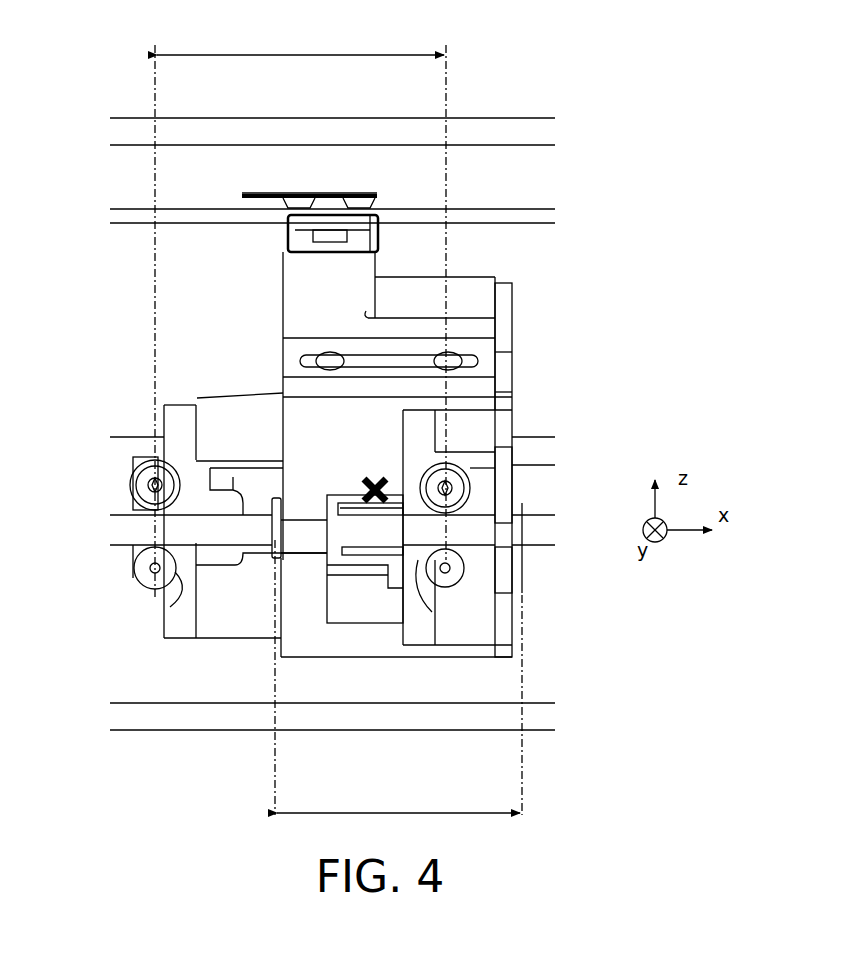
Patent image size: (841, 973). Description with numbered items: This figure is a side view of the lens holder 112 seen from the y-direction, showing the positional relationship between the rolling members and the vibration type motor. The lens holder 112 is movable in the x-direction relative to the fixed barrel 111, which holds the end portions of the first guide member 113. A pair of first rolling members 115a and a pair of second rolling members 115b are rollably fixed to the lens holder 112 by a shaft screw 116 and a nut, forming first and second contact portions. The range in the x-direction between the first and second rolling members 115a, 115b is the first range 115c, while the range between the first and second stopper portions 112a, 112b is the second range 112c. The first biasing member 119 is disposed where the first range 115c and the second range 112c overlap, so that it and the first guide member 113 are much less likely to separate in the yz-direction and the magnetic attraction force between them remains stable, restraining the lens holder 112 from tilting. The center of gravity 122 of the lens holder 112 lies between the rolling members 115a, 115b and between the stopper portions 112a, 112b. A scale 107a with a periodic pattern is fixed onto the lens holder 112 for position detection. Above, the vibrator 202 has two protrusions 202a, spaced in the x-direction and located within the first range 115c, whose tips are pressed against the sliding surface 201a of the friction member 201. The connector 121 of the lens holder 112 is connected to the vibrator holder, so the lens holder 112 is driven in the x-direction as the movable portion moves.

The fixed barrel 111 is at (385, 127).
The lens holder 112 is at (489, 298).
The first stopper portion 112a is at (288, 545).
The second stopper portion 112b is at (522, 595).
The second range 112c is at (398, 677).
The first guide member 113 is at (137, 531).
The first rolling members 115a is at (130, 500).
The second rolling members 115b is at (473, 507).
The first range 115c is at (300, 313).
The shaft screw 116 is at (130, 477).
The scale 107a is at (298, 362).
The first biasing member 119 is at (352, 562).
The connector 121 is at (306, 233).
The center of gravity 122 is at (376, 495).
The friction member 201 is at (197, 215).
The sliding surface 201a is at (226, 208).
The vibrator 202 is at (293, 197).
The protrusions 202a is at (306, 208).